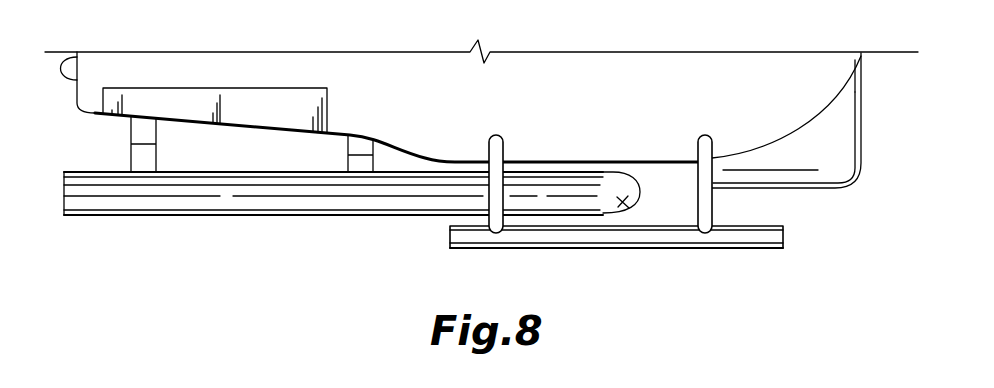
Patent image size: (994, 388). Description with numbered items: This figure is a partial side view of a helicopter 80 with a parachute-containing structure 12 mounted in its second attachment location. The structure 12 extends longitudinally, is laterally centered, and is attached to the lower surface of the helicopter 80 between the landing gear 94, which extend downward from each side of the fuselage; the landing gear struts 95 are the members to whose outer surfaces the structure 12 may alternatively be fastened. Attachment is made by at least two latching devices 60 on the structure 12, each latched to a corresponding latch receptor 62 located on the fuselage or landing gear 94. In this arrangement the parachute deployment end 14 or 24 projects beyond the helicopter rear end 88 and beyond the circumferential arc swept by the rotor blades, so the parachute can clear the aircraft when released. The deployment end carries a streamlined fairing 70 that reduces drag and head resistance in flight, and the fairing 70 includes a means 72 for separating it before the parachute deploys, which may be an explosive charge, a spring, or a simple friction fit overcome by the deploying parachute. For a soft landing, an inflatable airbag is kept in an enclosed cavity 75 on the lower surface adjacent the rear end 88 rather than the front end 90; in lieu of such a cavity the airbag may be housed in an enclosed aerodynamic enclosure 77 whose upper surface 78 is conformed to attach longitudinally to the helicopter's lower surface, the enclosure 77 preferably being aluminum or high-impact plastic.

The parachute-containing structure 12 is at (332, 203).
The parachute deployment end 14 is at (325, 233).
The parachute deployment end 24 is at (325, 233).
The latching device 60 is at (362, 163).
The latch receptor 62 is at (143, 132).
The streamlined fairing 70 is at (628, 205).
The means for separating the fairing 72 is at (607, 200).
The enclosed cavity 75 is at (270, 100).
The enclosed aerodynamic enclosure 77 is at (826, 168).
The upper surface 78 is at (828, 113).
The helicopter 80 is at (173, 66).
The rear end 88 is at (63, 53).
The front end 90 is at (848, 63).
The landing gear 94 is at (770, 236).
The landing gear strut 95 is at (493, 200).